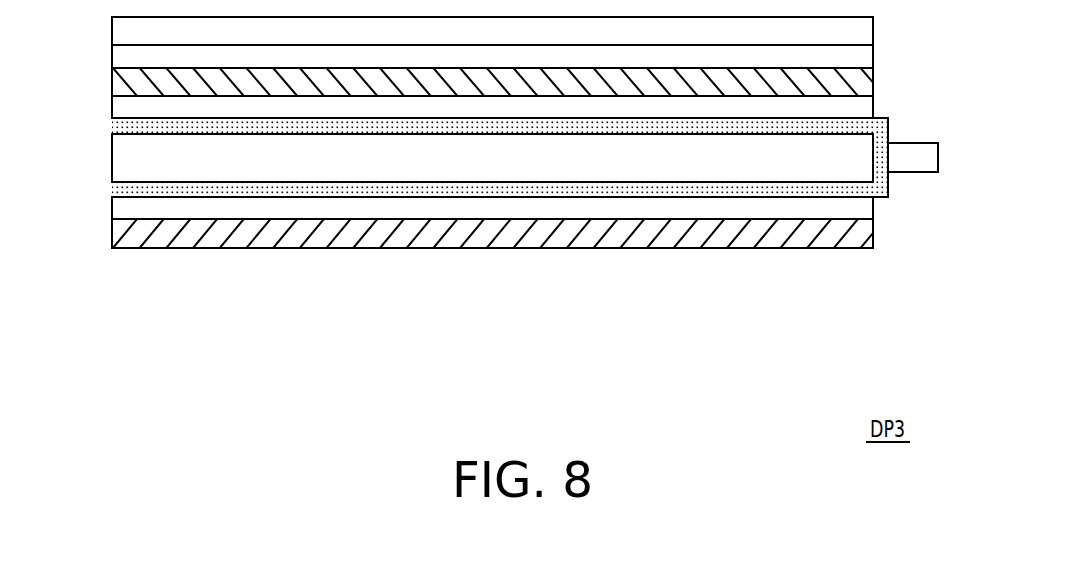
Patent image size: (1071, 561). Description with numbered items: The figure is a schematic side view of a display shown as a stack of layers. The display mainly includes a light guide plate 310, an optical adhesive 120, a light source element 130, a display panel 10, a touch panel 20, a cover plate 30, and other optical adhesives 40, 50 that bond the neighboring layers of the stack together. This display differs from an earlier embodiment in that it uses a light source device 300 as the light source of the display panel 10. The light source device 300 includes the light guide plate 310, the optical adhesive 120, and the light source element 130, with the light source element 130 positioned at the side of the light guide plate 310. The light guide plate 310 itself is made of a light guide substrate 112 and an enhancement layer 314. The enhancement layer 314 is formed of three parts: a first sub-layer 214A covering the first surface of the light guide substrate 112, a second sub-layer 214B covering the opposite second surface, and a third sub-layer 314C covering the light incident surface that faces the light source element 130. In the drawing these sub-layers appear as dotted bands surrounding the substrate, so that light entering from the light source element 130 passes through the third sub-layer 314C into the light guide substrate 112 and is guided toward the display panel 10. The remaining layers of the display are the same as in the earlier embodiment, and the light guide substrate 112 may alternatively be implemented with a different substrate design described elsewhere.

The display panel 10 is at (115, 230).
The touch panel 20 is at (113, 78).
The cover plate 30 is at (122, 27).
The optical adhesive 40 is at (120, 203).
The optical adhesive 50 is at (120, 54).
The light guide substrate 112 is at (707, 157).
The optical adhesive 120 is at (865, 109).
The light source element 130 is at (908, 147).
The first sub-layer 214A is at (795, 127).
The second sub-layer 214B is at (823, 188).
The light source device 300 is at (488, 254).
The light guide plate 310 is at (510, 254).
The enhancement layer 314 is at (510, 233).
The third sub-layer 314C is at (882, 165).